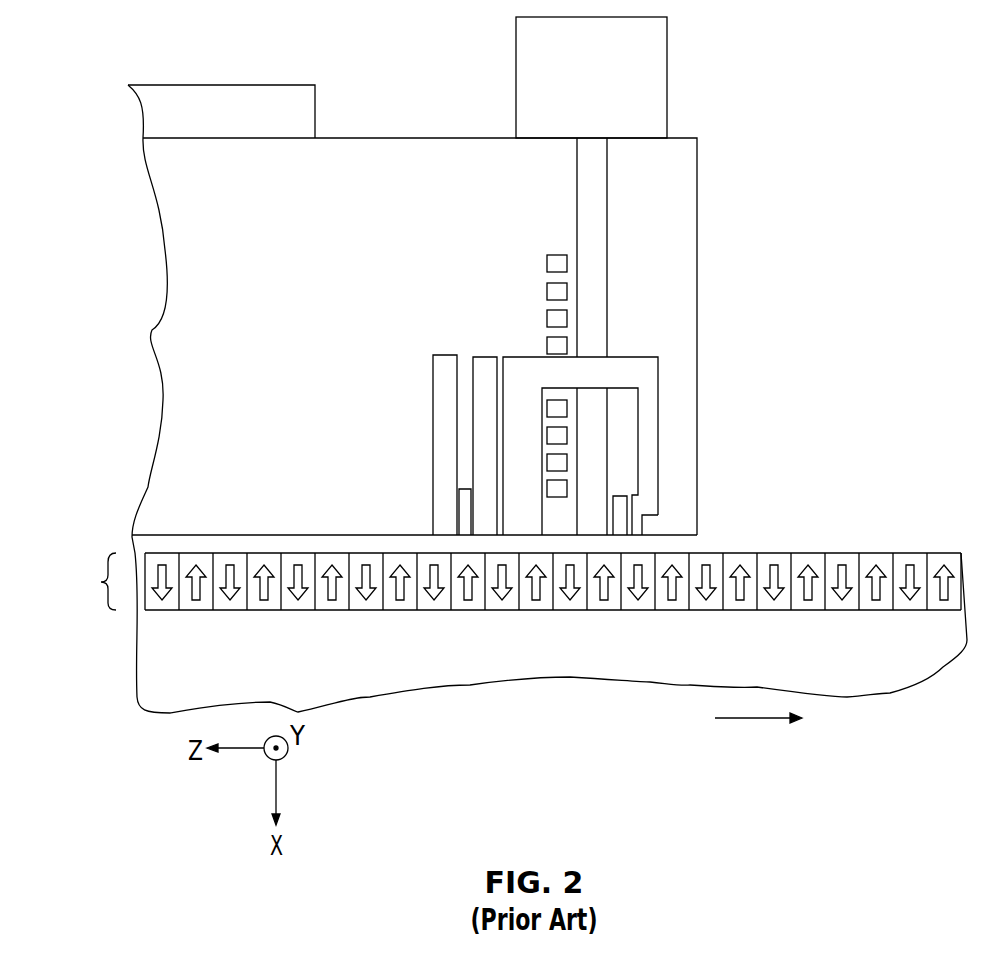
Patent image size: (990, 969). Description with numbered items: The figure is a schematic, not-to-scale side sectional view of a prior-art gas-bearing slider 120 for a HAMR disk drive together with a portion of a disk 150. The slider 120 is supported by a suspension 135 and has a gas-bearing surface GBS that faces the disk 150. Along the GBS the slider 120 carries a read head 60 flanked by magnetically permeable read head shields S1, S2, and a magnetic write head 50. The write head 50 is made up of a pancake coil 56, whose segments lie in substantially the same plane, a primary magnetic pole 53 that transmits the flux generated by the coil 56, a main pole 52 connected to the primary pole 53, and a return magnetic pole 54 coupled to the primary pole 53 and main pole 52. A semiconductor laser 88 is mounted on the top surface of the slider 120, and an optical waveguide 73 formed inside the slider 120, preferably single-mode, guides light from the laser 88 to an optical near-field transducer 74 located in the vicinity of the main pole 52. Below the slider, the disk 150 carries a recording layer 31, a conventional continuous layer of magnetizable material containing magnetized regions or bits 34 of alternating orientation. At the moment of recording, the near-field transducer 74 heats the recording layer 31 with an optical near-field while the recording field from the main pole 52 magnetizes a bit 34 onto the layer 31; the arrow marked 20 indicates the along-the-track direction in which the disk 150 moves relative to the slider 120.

The suspension 135 is at (248, 105).
The semiconductor laser 88 is at (655, 78).
The gas-bearing slider 120 is at (177, 420).
The optical waveguide 73 is at (588, 298).
The coil 56 is at (545, 263).
The magnetic write head 50 is at (518, 288).
The return magnetic pole 54 is at (522, 370).
The primary magnetic pole 53 is at (650, 407).
The read head shield S1 is at (445, 445).
The read head shield S2 is at (485, 353).
The read head 60 is at (457, 518).
The optical near-field transducer 74 is at (620, 495).
The main pole 52 is at (640, 527).
The gas-bearing surface GBS is at (695, 547).
The magnetized regions or bits 34 is at (913, 560).
The recording layer 31 is at (100, 583).
The disk 150 is at (848, 680).
The direction of media travel 20 is at (747, 718).